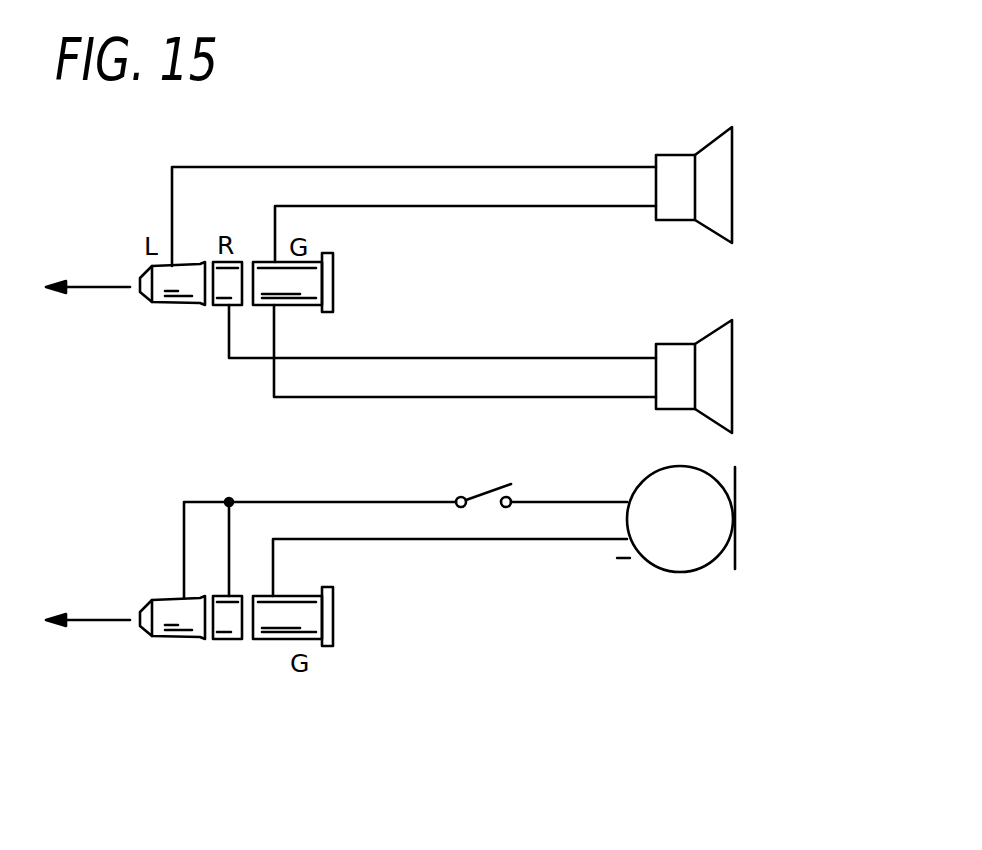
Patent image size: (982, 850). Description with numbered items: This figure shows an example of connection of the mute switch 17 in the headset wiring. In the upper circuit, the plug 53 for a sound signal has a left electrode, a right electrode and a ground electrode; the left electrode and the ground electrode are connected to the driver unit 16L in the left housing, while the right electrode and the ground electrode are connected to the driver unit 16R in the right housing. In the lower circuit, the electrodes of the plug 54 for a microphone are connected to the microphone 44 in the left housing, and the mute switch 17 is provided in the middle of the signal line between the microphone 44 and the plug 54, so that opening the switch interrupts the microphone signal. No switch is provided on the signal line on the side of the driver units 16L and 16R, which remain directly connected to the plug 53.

The driver unit 16L is at (736, 171).
The driver unit 16R is at (736, 359).
The mute switch 17 is at (487, 485).
The microphone 44 is at (688, 572).
The plug for a sound signal 53 is at (170, 310).
The plug for a microphone 54 is at (184, 645).